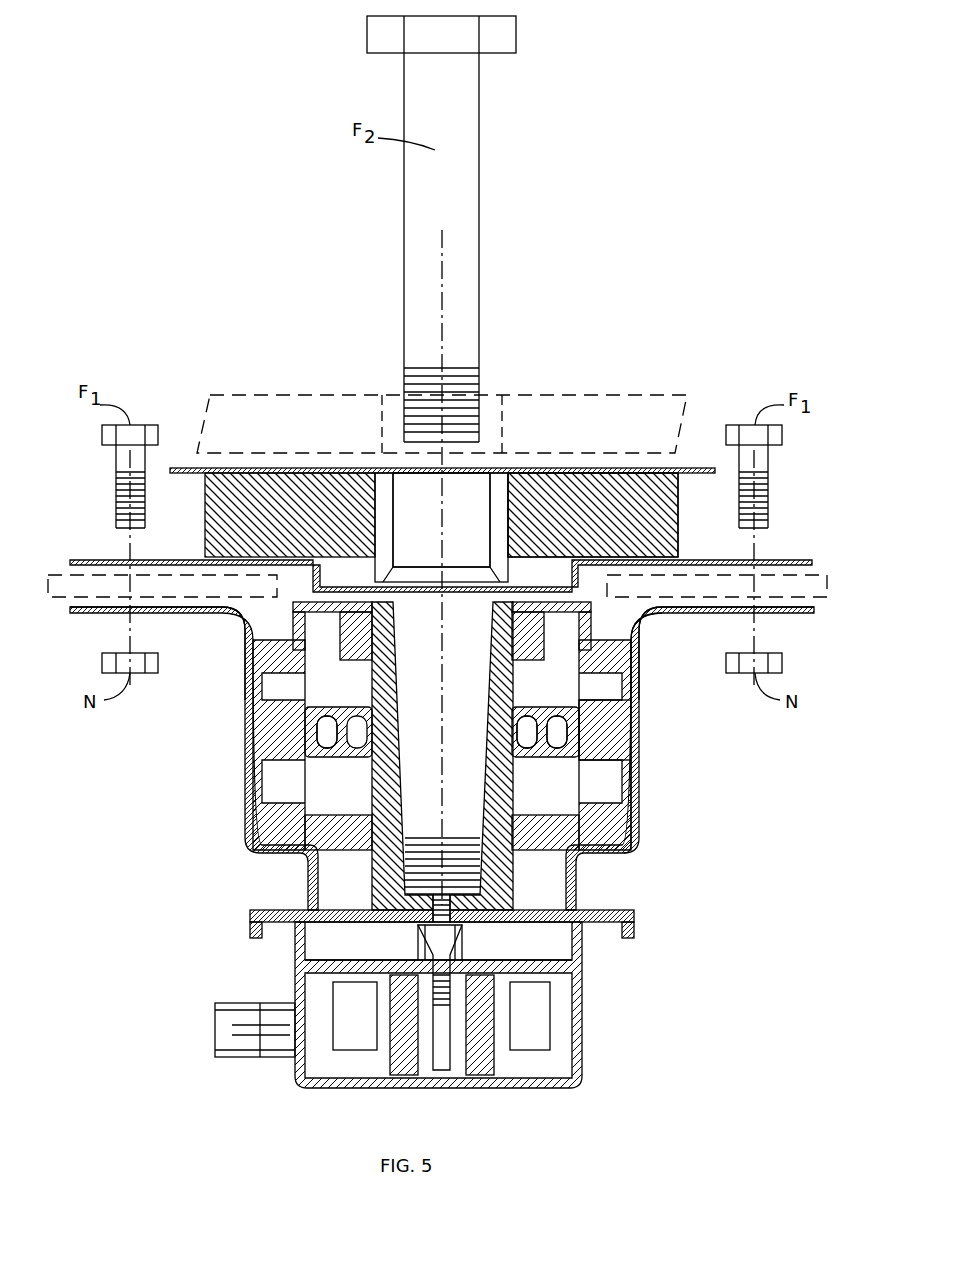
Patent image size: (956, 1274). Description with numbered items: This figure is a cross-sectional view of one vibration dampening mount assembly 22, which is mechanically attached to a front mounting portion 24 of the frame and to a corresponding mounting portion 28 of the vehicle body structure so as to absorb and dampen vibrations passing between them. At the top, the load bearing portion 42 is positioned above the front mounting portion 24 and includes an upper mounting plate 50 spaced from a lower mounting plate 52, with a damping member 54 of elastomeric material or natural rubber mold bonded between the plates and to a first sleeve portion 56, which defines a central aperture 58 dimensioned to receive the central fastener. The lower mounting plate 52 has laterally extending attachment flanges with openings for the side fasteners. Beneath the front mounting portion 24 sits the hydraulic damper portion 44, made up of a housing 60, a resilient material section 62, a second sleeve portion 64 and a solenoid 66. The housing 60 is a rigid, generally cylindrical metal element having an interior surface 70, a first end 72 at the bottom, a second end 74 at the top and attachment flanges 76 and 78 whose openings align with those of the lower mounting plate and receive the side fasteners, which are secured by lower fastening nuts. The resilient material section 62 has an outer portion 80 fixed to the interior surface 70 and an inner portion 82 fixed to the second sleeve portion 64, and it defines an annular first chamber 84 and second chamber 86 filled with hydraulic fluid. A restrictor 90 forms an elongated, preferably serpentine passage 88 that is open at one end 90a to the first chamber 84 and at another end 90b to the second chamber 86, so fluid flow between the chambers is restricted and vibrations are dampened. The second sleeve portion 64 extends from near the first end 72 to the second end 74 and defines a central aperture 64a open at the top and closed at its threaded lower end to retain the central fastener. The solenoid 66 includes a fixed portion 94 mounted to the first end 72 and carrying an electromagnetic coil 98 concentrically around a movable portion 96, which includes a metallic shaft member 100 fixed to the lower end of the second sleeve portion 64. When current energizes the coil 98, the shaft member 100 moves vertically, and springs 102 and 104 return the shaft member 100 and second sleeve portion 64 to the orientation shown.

The vibration dampening mount assembly 22 is at (683, 117).
The mounting portion 28 is at (589, 420).
The upper mounting plate 50 is at (690, 468).
The damping member 54 is at (640, 505).
The load bearing portion 42 is at (684, 540).
The first sleeve portion 56 is at (487, 490).
The central aperture 58 is at (415, 492).
The lower mounting plate 52 is at (802, 558).
The front mounting portion 24 is at (62, 592).
The resilient material section 62 is at (90, 560).
The housing 60 is at (778, 558).
The hydraulic damper portion 44 is at (245, 790).
The attachment flange 78 is at (95, 613).
The attachment flange 76 is at (790, 613).
The second end 74 is at (640, 627).
The interior surface 70 is at (628, 800).
The outer portion 80 is at (258, 757).
The first chamber 84 is at (600, 690).
The second chamber 86 is at (625, 755).
The inner portion 82 is at (383, 720).
The one end 90a is at (327, 720).
The passage 88 is at (557, 720).
The restrictor 90 is at (537, 752).
The another end 90b is at (556, 752).
The second sleeve portion 64 is at (388, 807).
The central aperture 64a is at (489, 660).
The first end 72 is at (615, 945).
The solenoid 66 is at (588, 1003).
The fixed portion 94 is at (297, 980).
The spring 104 is at (372, 1035).
The electromagnetic coil 98 is at (530, 1035).
The metallic shaft member 100 is at (440, 942).
The movable portion 96 is at (476, 937).
The spring 102 is at (418, 940).